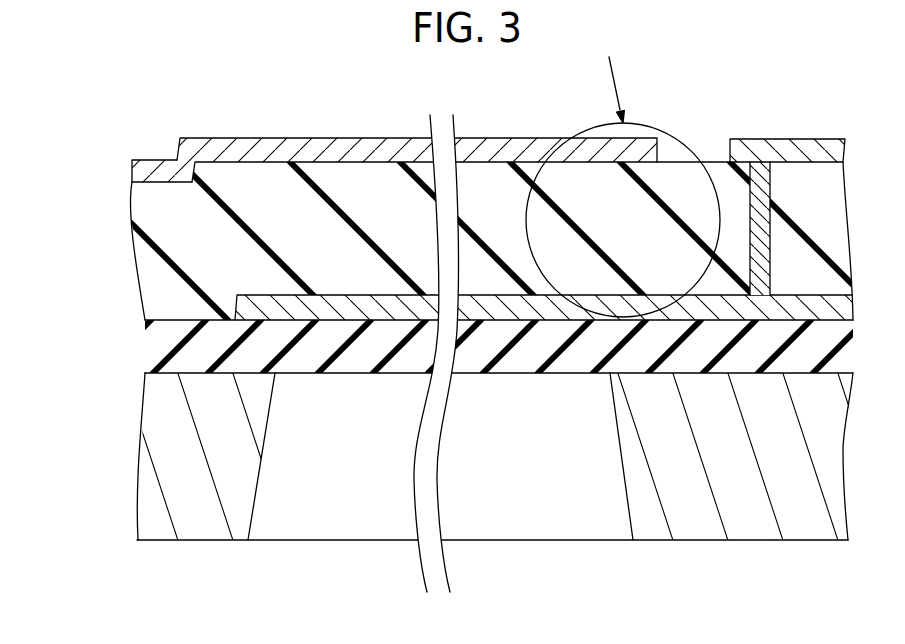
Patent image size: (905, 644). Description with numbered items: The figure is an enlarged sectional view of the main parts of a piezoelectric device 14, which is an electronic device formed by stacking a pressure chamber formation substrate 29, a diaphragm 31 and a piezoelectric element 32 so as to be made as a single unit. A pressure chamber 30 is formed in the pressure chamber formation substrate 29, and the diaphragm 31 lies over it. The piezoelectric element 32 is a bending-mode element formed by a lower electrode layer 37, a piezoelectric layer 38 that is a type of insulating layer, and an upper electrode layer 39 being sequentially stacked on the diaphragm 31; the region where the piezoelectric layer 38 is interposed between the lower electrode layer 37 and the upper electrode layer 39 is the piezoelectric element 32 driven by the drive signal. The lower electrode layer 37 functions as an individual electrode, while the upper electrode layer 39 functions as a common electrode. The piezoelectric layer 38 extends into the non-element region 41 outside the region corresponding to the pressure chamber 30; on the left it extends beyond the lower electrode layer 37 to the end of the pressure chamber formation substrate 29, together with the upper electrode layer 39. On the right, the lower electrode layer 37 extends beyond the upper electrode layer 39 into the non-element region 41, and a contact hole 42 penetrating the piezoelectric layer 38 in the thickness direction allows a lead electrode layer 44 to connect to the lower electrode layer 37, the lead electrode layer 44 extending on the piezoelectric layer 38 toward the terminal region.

The piezoelectric device 14 is at (243, 97).
The pressure chamber formation substrate 29 is at (203, 498).
The pressure chamber 30 is at (537, 463).
The diaphragm 31 is at (367, 352).
The piezoelectric element 32 is at (62, 318).
The lower electrode layer 37 is at (253, 310).
The piezoelectric layer 38 is at (190, 208).
The upper electrode layer 39 is at (150, 168).
The non-element region 41 is at (140, 127).
The contact hole 42 is at (760, 192).
The lead electrode layer 44 is at (808, 147).